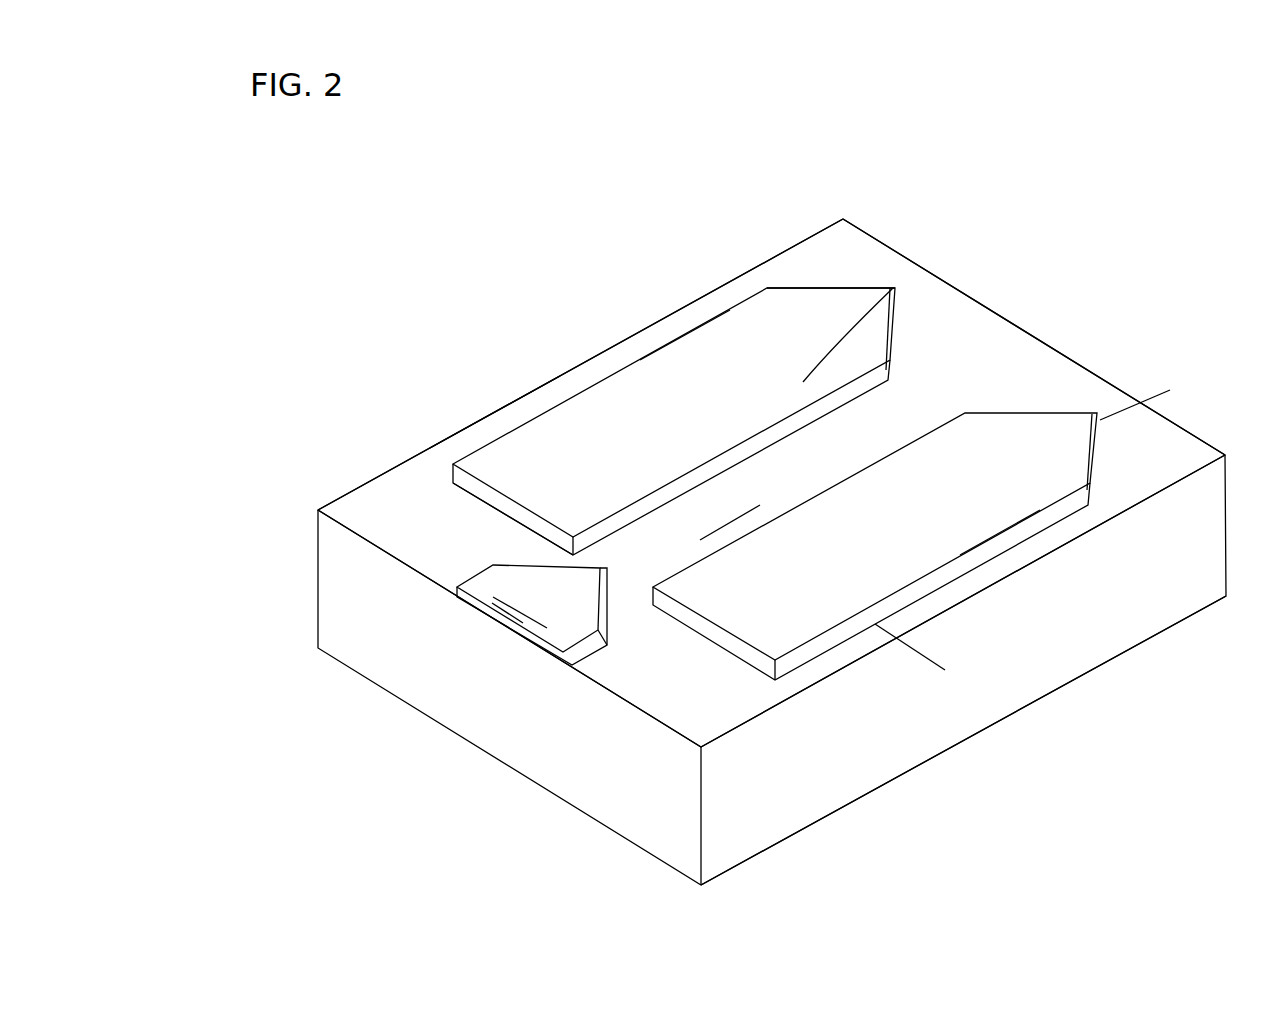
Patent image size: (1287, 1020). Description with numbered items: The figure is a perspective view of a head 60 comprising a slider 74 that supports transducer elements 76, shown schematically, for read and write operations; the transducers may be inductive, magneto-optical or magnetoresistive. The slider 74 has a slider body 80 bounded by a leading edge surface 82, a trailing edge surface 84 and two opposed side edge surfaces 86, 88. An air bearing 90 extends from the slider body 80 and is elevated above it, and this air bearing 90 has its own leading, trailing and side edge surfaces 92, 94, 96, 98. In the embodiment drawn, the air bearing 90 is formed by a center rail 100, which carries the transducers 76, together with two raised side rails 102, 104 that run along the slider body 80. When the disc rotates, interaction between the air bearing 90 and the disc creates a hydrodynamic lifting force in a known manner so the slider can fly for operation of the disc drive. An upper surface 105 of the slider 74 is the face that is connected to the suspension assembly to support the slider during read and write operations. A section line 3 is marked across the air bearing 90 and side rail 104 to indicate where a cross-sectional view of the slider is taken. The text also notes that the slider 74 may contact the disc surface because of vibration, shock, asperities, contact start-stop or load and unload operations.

The section line 3 is at (887, 615).
The head 60 is at (1030, 292).
The slider 74 is at (783, 252).
The transducer elements 76 is at (523, 620).
The slider body 80 is at (1113, 418).
The leading edge surface 82 is at (1050, 335).
The trailing edge surface 84 is at (405, 572).
The side edge surface 86 is at (505, 400).
The side edge surface 88 is at (827, 687).
The air bearing 90 is at (825, 532).
The leading edge surface 92 is at (852, 278).
The trailing edge surface 94 is at (465, 483).
The side edge surface 96 is at (684, 322).
The side edge surface 98 is at (993, 528).
The center rail 100 is at (532, 615).
The raised side rail 102 is at (680, 437).
The raised side rail 104 is at (856, 580).
The upper surface 105 is at (1118, 656).